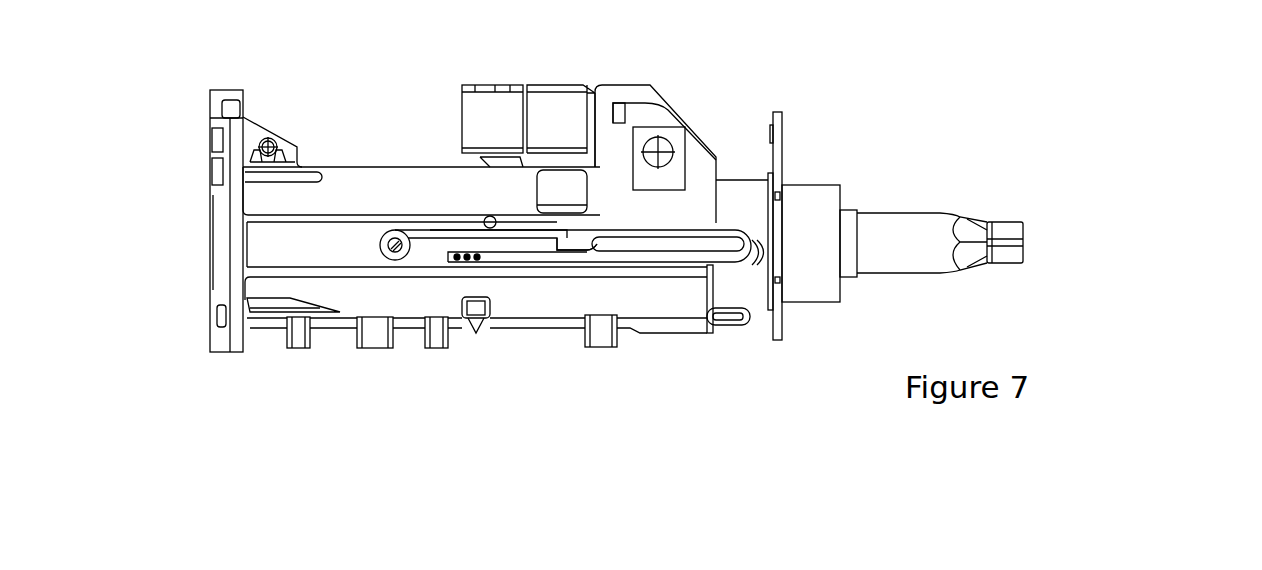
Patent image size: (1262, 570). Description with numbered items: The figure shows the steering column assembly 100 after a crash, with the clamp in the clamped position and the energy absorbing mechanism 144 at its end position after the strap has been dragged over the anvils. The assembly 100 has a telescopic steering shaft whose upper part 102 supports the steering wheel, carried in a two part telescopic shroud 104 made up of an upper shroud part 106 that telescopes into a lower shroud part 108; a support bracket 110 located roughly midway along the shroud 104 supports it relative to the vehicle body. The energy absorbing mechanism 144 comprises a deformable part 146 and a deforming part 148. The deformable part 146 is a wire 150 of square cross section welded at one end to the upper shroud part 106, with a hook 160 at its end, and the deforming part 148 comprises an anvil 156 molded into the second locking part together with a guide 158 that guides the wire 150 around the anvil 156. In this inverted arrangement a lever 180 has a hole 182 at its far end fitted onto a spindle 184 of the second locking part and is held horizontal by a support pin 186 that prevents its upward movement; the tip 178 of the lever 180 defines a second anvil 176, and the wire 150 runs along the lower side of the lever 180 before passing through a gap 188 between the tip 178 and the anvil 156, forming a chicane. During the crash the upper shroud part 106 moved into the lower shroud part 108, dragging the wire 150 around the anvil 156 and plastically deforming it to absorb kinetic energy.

The steering column assembly 100 is at (1163, 113).
The upper part 102 is at (1026, 242).
The shroud 104 is at (830, 146).
The upper shroud part 106 is at (796, 183).
The lower shroud part 108 is at (378, 165).
The support bracket 110 is at (628, 80).
The energy absorbing mechanism 144 is at (557, 279).
The deformable part 146 is at (503, 263).
The deforming part 148 is at (690, 255).
The wire 150 is at (612, 269).
The anvil 156 is at (656, 247).
The guide 158 is at (763, 265).
The hook 160 is at (736, 270).
The second anvil 176 is at (447, 227).
The tip 178 is at (557, 227).
The lever 180 is at (508, 227).
The hole 182 is at (389, 260).
The spindle 184 is at (379, 245).
The support pin 186 is at (490, 215).
The gap 188 is at (593, 232).